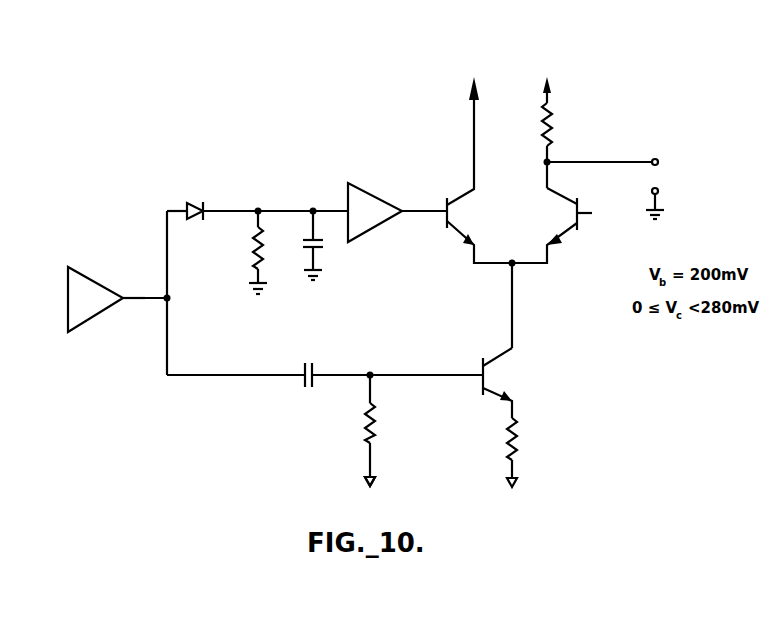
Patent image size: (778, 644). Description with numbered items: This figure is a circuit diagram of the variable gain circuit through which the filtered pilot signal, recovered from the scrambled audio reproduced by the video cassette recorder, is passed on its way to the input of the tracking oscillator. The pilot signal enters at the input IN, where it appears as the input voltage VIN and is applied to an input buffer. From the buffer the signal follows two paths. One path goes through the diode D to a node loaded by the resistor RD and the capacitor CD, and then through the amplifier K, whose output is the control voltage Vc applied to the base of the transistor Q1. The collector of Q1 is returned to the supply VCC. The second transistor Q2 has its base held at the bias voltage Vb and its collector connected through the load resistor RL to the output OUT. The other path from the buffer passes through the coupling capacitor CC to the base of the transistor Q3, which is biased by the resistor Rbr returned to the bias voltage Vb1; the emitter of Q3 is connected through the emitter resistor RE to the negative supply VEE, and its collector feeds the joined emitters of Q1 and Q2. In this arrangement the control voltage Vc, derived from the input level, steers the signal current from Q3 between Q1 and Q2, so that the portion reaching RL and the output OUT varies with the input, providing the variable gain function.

The input buffer / input node IN is at (119, 299).
The input voltage VIN is at (136, 280).
The diode D is at (195, 200).
The resistor R_D RD is at (267, 252).
The capacitor C_D CD is at (324, 245).
The amplifier with gain K is at (397, 212).
The control voltage node Vc is at (428, 197).
The transistor Q1 is at (479, 206).
The positive supply VCC is at (472, 95).
The transistor Q2 is at (544, 225).
The bias voltage Vb is at (595, 217).
The load resistor RL is at (558, 132).
The output terminal OUT is at (624, 189).
The coupling capacitor C_C CC is at (337, 362).
The resistor R_br Rbr is at (386, 430).
The bias voltage V_b1 Vb1 is at (385, 493).
The transistor Q3 is at (506, 383).
The emitter resistor R_E RE is at (524, 448).
The negative supply VEE is at (527, 496).